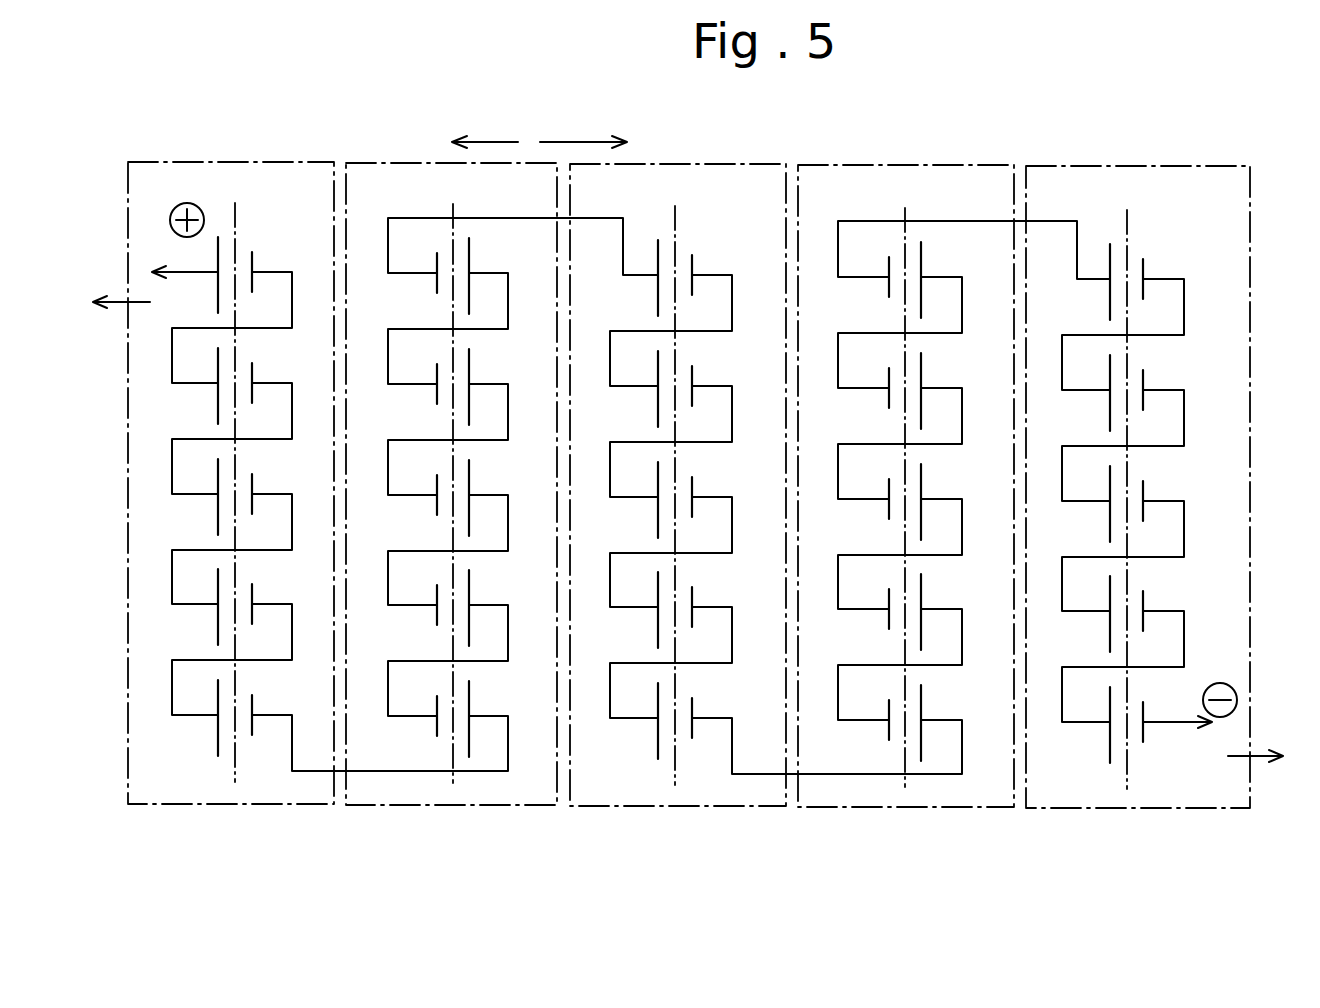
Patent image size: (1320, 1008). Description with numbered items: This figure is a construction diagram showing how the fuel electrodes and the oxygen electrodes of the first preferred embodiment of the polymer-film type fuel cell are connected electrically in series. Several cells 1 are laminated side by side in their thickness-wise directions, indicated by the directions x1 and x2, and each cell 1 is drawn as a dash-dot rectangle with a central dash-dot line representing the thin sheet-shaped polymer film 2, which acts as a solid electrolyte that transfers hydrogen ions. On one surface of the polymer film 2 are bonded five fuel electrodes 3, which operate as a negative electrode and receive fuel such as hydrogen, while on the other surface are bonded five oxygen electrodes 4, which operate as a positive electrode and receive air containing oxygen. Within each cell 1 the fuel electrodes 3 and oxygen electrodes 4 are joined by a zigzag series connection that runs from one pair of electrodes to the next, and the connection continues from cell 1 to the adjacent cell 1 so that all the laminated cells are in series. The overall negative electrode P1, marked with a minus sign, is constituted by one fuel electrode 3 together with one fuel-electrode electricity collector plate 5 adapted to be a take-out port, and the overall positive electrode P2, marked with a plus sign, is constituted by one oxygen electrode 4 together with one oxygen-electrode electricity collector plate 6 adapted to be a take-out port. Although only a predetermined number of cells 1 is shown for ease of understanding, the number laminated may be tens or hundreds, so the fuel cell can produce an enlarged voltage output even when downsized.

The cell 1 is at (689, 533).
The polymer film 2 is at (718, 482).
The fuel electrode 3 is at (1196, 755).
The oxygen electrode 4 is at (632, 500).
The fuel-electrode electricity collector plate 5 is at (1267, 757).
The oxygen-electrode electricity collector plate 6 is at (109, 302).
The overall negative electrode P1 is at (1237, 695).
The overall positive electrode P2 is at (197, 205).
The direction X1 x1 is at (494, 141).
The direction X2 x2 is at (577, 142).